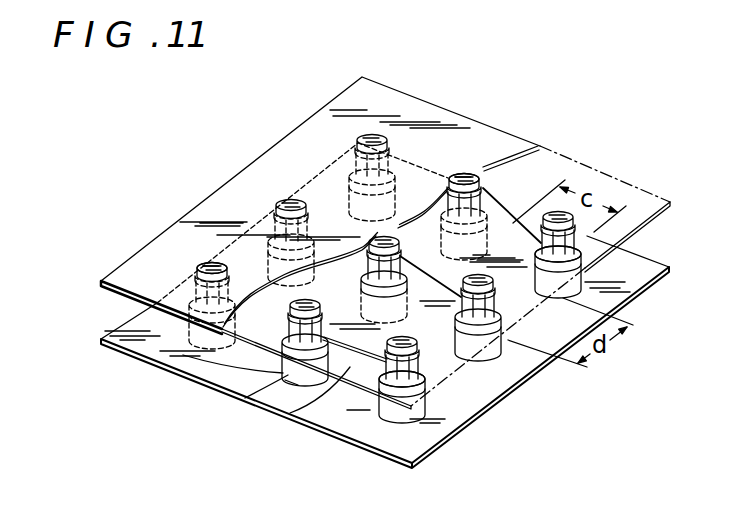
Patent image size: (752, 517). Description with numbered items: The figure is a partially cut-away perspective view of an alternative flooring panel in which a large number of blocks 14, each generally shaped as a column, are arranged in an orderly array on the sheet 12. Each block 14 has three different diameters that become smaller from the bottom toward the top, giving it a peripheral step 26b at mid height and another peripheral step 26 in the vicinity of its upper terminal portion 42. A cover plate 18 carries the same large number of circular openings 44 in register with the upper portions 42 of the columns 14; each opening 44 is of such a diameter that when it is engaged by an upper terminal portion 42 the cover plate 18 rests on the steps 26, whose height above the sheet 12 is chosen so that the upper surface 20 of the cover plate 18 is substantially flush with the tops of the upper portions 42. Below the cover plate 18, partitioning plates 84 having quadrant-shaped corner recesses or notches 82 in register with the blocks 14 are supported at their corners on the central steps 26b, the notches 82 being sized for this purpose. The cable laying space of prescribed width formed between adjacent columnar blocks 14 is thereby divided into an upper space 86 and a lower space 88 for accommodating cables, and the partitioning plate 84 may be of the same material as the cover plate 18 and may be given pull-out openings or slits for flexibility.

The sheet 12 is at (522, 357).
The block 14 is at (566, 249).
The cover plate 18 is at (175, 182).
The upper surface 20 is at (247, 168).
The step 26 is at (508, 172).
The peripheral step 26b is at (432, 373).
The upper portion 42 is at (212, 265).
The circular opening 44 is at (204, 264).
The corner recess 82 is at (507, 224).
The partitioning plate 84 is at (633, 290).
The upper space 86 is at (418, 214).
The lower space 88 is at (298, 385).